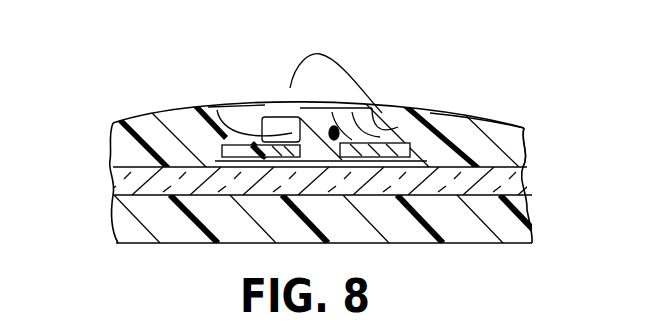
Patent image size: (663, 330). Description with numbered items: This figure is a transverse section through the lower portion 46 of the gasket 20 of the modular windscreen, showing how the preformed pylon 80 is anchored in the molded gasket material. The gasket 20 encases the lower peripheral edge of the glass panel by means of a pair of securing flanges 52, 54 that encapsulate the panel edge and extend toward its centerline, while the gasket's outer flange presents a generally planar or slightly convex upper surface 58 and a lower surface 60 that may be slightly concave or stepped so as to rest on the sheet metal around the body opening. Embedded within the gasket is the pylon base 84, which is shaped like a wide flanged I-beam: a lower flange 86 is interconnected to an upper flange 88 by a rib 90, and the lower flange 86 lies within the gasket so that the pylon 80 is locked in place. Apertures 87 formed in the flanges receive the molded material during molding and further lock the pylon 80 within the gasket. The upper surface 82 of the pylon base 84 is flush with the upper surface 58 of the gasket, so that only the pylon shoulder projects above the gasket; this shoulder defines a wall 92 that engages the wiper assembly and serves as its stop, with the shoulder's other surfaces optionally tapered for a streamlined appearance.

The gasket 20 is at (489, 87).
The lower portion of gasket 46 is at (543, 145).
The securing flange 52 is at (113, 124).
The securing flange 54 is at (172, 233).
The upper surface 58 is at (504, 125).
The lower surface 60 is at (480, 244).
The preformed pylon 80 is at (330, 60).
The upper surface of pylon base 82 is at (372, 106).
The pylon base 84 is at (400, 142).
The lower flange 86 is at (222, 144).
The apertures 87 is at (220, 157).
The upper flange 88 is at (263, 105).
The rib 90 is at (386, 136).
The wall 92 is at (307, 80).